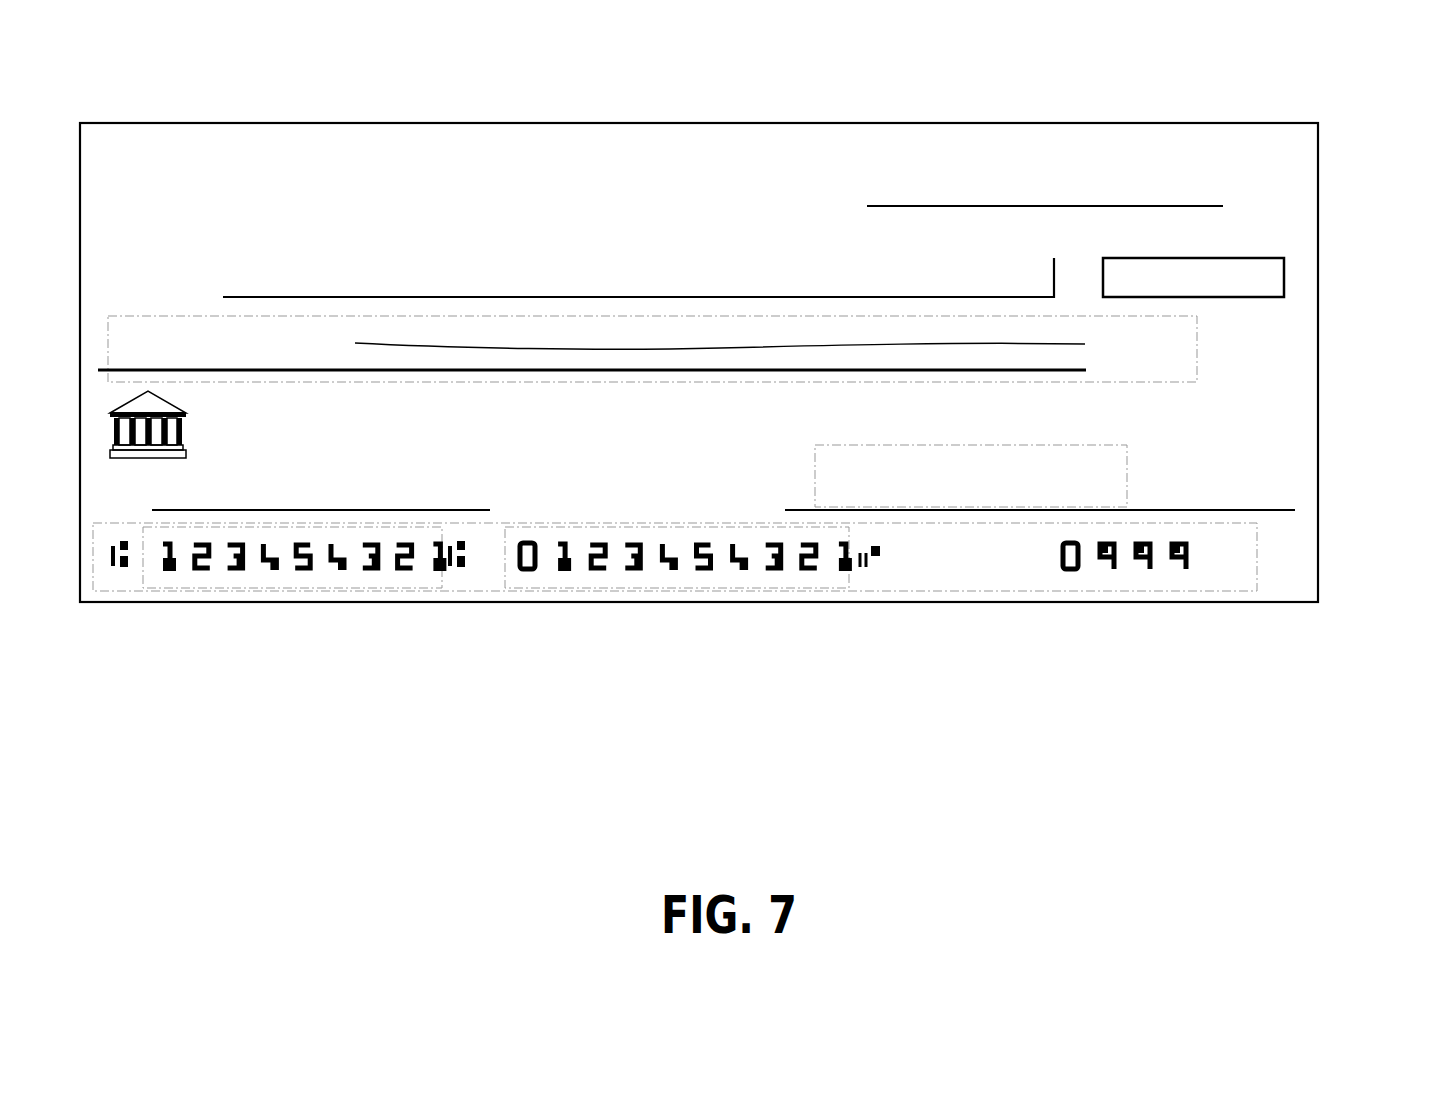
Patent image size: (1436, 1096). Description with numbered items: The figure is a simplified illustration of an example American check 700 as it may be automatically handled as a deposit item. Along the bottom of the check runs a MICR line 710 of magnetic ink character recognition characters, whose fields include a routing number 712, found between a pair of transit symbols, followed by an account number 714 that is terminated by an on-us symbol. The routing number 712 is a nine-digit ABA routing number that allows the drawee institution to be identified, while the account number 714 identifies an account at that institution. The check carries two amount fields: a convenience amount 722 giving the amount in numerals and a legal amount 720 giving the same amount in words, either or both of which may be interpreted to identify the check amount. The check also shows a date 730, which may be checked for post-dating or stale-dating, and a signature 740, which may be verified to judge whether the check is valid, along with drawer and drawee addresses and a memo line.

The example American check 700 is at (609, 145).
The MICR line 710 is at (1215, 568).
The routing number 712 is at (387, 575).
The account number 714 is at (772, 575).
The legal amount 720 is at (1103, 373).
The convenience amount 722 is at (1243, 272).
The date 730 is at (1053, 153).
The signature 740 is at (1097, 460).